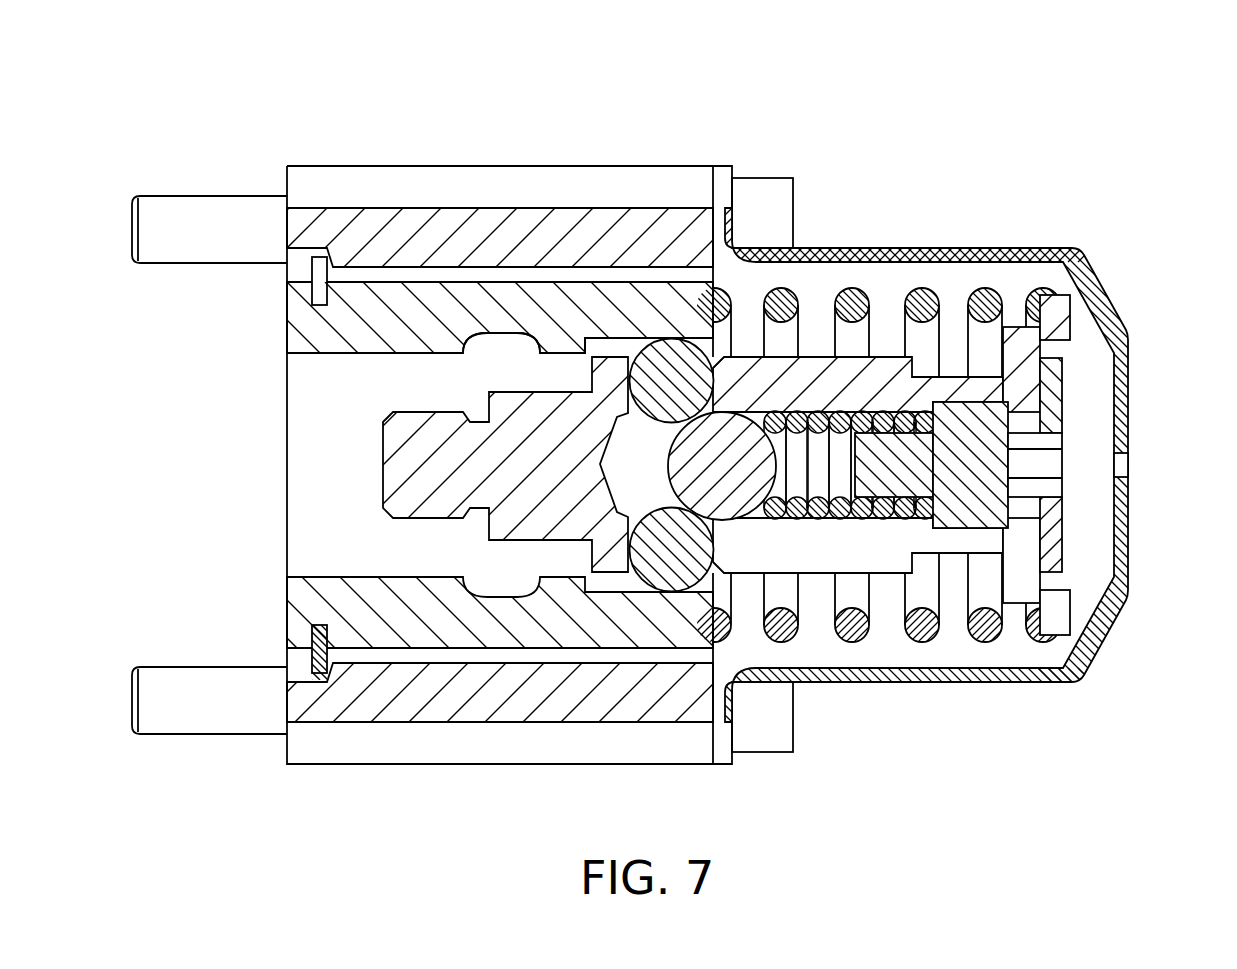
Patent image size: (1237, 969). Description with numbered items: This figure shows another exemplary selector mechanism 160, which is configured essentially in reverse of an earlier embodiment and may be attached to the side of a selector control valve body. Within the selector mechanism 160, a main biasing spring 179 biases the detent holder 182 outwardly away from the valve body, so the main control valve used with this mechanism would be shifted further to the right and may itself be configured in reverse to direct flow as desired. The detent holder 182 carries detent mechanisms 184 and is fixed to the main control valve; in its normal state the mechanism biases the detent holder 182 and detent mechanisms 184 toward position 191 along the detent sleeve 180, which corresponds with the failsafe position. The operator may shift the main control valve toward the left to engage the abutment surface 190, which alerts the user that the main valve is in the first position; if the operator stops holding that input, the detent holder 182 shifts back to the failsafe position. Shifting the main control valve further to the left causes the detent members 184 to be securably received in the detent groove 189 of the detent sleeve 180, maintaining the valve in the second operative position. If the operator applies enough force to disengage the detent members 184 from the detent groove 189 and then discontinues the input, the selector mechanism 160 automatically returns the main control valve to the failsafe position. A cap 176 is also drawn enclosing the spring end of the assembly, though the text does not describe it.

The selector mechanism 160 is at (1108, 114).
The cap 176 is at (1128, 271).
The main biasing spring 179 is at (934, 297).
The detent sleeve 180 is at (380, 637).
The detent holder 182 is at (528, 527).
The detent mechanisms 184 is at (650, 566).
The detent groove 189 is at (490, 336).
The abutment surface 190 is at (584, 340).
The position 191 is at (655, 344).